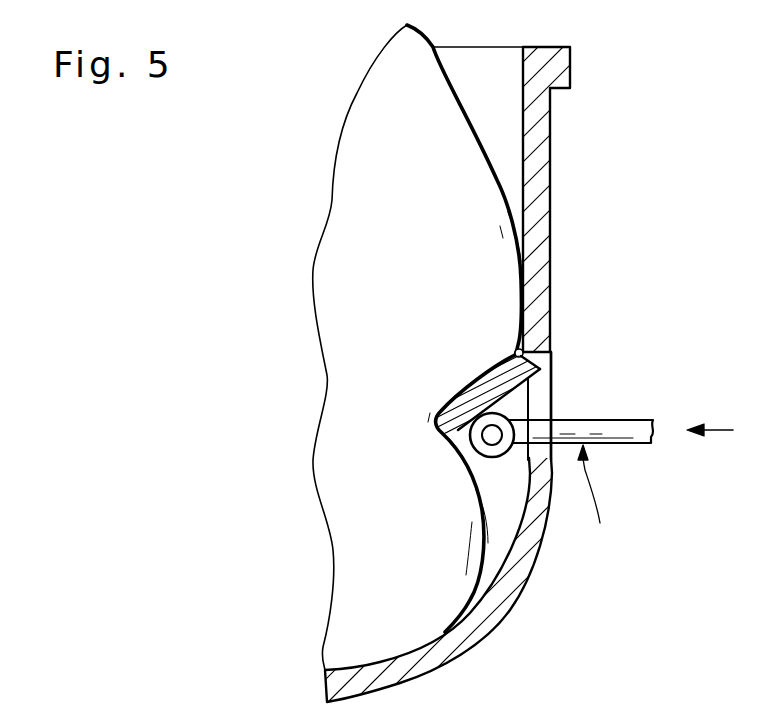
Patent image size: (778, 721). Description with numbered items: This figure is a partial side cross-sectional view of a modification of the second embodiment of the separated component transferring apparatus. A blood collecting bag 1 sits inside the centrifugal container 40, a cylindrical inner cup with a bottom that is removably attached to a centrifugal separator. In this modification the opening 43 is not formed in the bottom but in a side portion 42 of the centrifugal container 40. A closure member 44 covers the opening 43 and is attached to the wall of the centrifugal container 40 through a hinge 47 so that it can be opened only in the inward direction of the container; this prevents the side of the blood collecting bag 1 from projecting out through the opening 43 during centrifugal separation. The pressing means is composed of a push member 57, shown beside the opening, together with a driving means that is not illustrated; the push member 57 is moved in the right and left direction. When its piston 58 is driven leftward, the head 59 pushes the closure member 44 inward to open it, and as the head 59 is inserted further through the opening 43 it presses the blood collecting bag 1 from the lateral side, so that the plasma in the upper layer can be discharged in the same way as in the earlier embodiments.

The blood collecting bag 1 is at (353, 242).
The centrifugal container 40 is at (553, 173).
The side portion 42 is at (541, 247).
The opening 43 is at (541, 396).
The closure member 44 is at (462, 392).
The hinge 47 is at (532, 345).
The push member 57 is at (601, 501).
The piston 58 is at (637, 440).
The head 59 is at (490, 458).